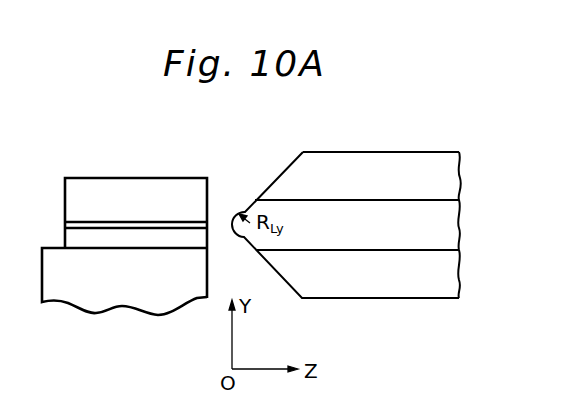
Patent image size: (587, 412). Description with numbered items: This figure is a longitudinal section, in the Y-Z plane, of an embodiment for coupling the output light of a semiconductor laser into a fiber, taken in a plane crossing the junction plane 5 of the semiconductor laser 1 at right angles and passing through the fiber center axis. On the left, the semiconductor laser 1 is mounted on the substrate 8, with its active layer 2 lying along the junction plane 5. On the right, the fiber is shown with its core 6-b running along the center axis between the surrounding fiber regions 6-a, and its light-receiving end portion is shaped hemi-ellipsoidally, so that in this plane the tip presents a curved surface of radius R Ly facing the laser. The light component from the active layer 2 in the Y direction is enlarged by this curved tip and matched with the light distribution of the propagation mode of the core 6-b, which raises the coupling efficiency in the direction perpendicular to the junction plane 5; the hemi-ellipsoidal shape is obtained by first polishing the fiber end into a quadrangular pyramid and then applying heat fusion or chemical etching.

The semiconductor laser 1 is at (170, 176).
The active layer 2 is at (129, 228).
The junction plane 5 is at (94, 222).
The substrate 8 is at (112, 302).
The fiber cladding 6-a is at (379, 152).
The core 6-b is at (462, 232).